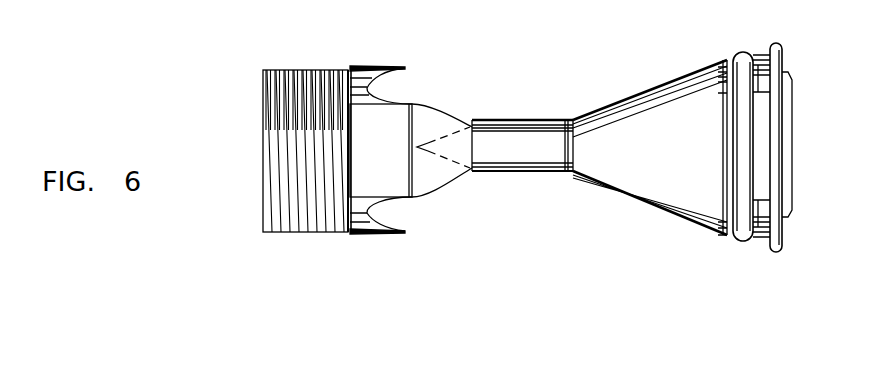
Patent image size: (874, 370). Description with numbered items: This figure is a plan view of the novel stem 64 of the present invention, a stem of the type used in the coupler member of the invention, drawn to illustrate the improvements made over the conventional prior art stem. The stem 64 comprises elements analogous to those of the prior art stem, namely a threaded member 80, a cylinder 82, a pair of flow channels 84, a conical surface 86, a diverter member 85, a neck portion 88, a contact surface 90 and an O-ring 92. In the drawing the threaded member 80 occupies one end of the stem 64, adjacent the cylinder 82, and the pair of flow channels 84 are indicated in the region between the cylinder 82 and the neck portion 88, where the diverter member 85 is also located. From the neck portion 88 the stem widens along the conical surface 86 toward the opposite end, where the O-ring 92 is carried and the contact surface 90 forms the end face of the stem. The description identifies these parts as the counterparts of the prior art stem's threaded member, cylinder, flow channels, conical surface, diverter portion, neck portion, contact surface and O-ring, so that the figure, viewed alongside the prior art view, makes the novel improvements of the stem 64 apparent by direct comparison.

The stem 64 is at (534, 252).
The threaded member 80 is at (292, 235).
The cylinder 82 is at (378, 66).
The pair of flow channels 84 is at (386, 101).
The diverter member 85 is at (425, 183).
The conical surface 86 is at (660, 108).
The neck portion 88 is at (518, 121).
The contact surface 90 is at (792, 130).
The O-ring 92 is at (743, 229).